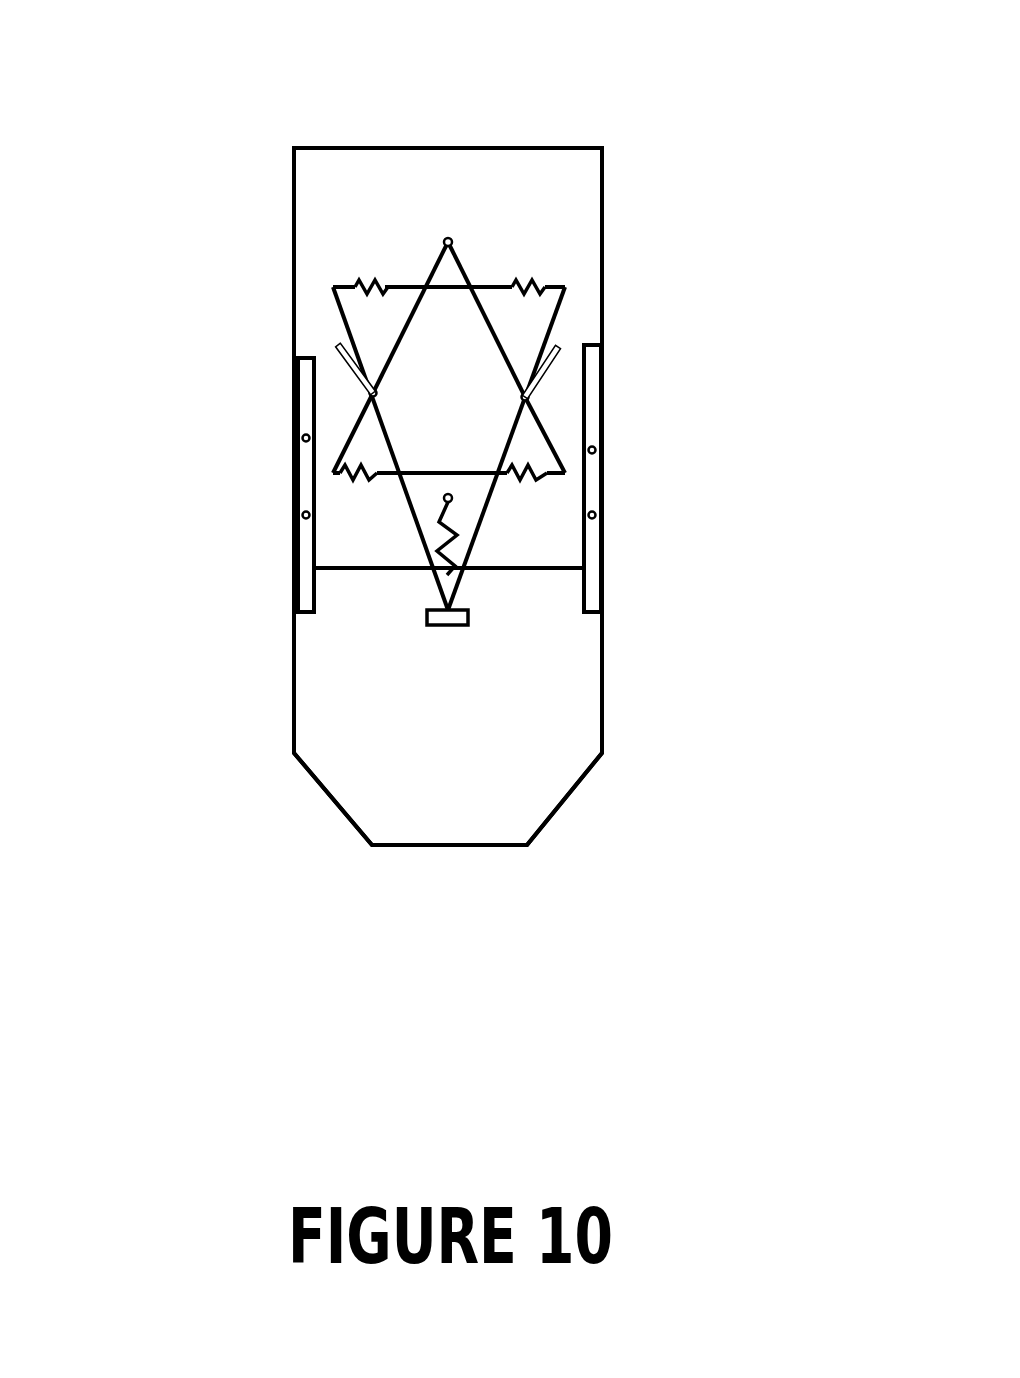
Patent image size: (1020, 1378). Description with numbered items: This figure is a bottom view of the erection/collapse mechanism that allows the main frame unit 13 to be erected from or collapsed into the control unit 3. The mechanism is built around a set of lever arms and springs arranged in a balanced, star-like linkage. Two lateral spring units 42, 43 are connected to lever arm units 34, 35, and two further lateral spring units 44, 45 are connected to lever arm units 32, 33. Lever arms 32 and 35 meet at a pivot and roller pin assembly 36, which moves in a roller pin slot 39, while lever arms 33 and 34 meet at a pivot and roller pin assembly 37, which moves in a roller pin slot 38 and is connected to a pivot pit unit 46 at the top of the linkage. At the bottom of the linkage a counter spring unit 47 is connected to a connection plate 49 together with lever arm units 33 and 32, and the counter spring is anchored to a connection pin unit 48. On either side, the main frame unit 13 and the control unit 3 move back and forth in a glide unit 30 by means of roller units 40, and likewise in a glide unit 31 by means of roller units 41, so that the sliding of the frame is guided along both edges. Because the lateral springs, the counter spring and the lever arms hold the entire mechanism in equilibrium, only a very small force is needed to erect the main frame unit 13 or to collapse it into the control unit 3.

The control unit 3 is at (525, 172).
The main frame unit 13 is at (327, 712).
The glide unit 30 is at (267, 475).
The glide unit 31 is at (631, 439).
The lever arm unit 32 is at (528, 540).
The lever arm unit 33 is at (389, 538).
The lever arm unit 34 is at (319, 422).
The lever arm unit 35 is at (521, 315).
The pivot and roller pin assembly 36 is at (566, 396).
The pivot and roller pin assembly 37 is at (340, 383).
The roller pin slot 38 is at (318, 334).
The roller pin slot 39 is at (586, 348).
The roller unit 40 is at (280, 536).
The roller unit 41 is at (626, 521).
The lateral spring unit 42 is at (315, 497).
The lateral spring unit 43 is at (561, 487).
The lateral spring unit 44 is at (339, 266).
The lateral spring unit 45 is at (561, 267).
The pivot pit unit 46 is at (441, 213).
The counter spring unit 47 is at (475, 573).
The connection pin unit 48 is at (481, 523).
The connection plate 49 is at (469, 653).